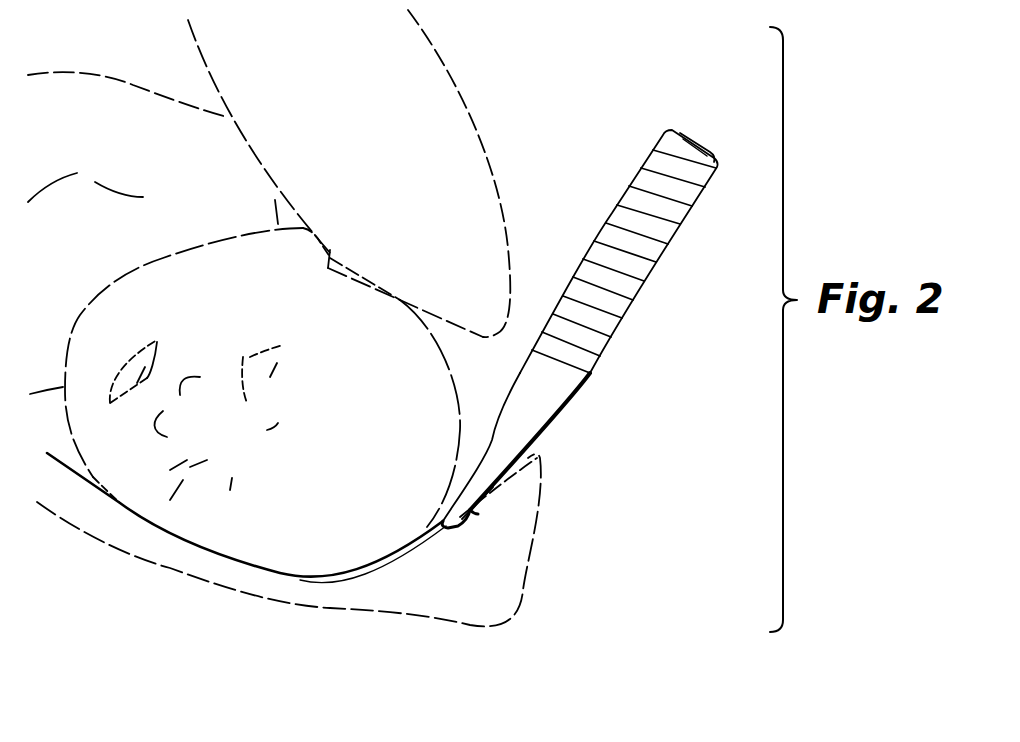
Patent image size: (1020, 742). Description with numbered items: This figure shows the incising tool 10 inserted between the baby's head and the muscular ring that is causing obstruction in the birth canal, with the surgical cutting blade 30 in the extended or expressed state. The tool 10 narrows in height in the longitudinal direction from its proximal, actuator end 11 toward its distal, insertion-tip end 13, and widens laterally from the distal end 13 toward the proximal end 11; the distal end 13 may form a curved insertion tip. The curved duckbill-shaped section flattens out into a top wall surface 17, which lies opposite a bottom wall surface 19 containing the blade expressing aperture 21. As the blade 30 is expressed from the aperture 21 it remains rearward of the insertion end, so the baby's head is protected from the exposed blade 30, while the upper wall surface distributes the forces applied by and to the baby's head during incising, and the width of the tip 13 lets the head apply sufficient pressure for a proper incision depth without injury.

The incising tool 10 is at (597, 193).
The proximal end 11 is at (664, 132).
The distal end 13 is at (423, 528).
The top wall surface 17 is at (499, 422).
The bottom wall surface 19 is at (553, 420).
The blade expressing aperture 21 is at (467, 523).
The surgical cutting blade 30 is at (475, 515).